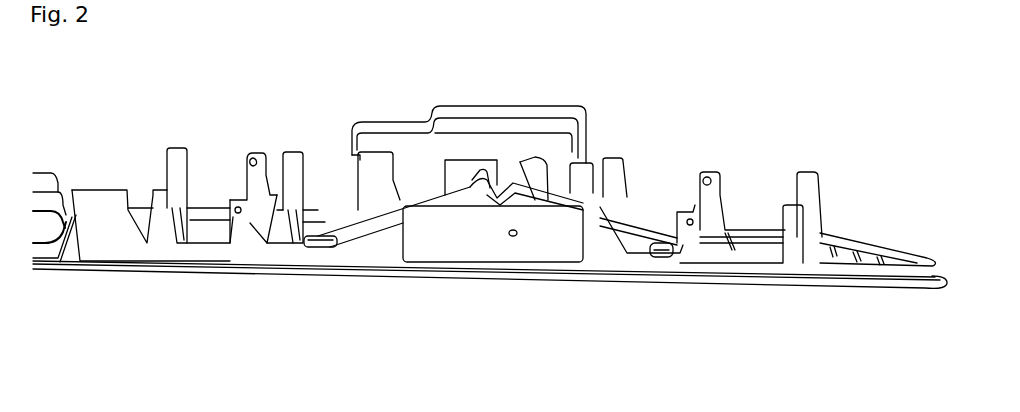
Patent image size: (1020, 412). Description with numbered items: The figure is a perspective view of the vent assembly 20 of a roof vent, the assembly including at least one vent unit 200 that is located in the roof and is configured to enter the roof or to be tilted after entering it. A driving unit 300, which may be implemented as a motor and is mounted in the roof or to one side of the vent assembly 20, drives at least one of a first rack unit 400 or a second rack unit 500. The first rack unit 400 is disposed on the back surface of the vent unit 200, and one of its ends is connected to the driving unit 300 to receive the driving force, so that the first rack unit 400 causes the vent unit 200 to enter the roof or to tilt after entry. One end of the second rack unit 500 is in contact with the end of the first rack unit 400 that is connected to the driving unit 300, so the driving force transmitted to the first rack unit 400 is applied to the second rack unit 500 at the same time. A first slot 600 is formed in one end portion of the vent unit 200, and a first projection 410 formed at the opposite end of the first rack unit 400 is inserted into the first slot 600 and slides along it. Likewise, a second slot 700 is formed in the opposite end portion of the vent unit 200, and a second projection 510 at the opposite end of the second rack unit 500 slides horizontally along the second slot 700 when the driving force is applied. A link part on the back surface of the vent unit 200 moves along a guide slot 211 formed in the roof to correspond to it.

The vent assembly 20 is at (393, 73).
The vent unit 200 is at (893, 292).
The guide slot 211 is at (160, 190).
The driving unit 300 is at (527, 115).
The first rack unit 400 is at (385, 222).
The first projection 410 is at (327, 249).
The second rack unit 500 is at (630, 230).
The second projection 510 is at (663, 253).
The first slot 600 is at (278, 195).
The second slot 700 is at (655, 258).